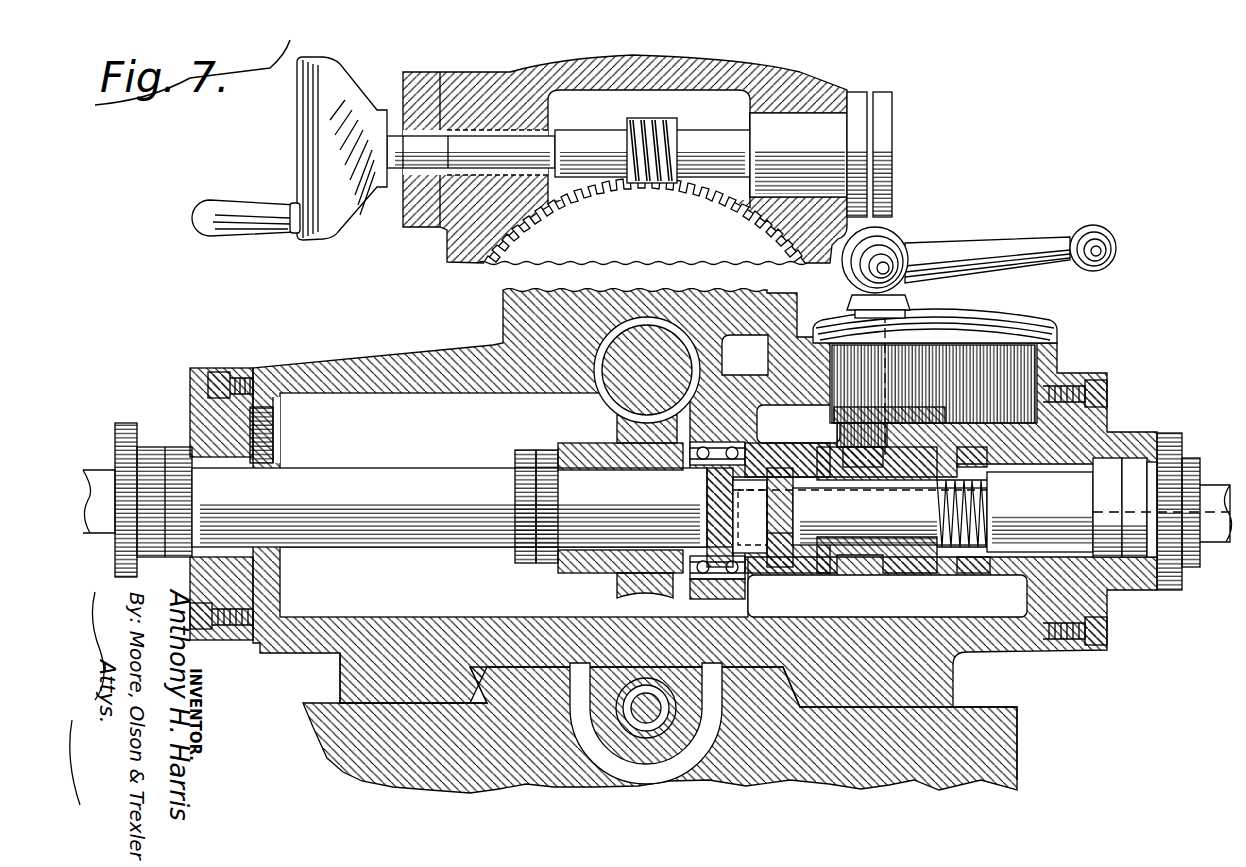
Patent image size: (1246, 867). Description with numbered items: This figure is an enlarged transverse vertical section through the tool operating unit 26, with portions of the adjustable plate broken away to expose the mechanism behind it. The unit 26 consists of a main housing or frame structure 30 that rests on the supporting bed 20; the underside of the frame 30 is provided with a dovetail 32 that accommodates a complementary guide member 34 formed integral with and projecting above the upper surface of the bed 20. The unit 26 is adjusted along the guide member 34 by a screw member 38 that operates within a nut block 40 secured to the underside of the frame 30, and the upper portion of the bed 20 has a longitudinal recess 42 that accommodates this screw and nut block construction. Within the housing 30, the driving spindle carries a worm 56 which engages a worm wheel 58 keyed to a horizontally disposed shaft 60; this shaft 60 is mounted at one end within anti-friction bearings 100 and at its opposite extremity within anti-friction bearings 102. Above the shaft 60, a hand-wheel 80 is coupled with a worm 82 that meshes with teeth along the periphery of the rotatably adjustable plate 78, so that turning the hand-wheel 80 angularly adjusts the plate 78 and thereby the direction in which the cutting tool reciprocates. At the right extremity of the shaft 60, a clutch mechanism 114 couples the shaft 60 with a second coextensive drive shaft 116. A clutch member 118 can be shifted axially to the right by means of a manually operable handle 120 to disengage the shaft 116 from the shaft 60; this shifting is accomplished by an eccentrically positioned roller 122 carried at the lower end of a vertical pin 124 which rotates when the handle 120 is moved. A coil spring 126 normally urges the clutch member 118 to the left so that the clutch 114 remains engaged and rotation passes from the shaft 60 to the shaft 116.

The supporting bed 20 is at (975, 720).
The tool operating unit 26 is at (857, 80).
The main housing 30 is at (342, 363).
The dovetail 32 is at (770, 700).
The guide member 34 is at (488, 662).
The screw member 38 is at (646, 725).
The nut block 40 is at (612, 730).
The longitudinal recess 42 is at (590, 735).
The worm 56 is at (688, 350).
The worm wheel 58 is at (620, 436).
The horizontally disposed shaft 60 is at (582, 472).
The rotatably adjustable plate 78 is at (642, 233).
The hand-wheel 80 is at (328, 200).
The worm 82 is at (662, 125).
The anti-friction bearings 100 is at (723, 427).
The anti-friction bearings 102 is at (160, 455).
The clutch mechanism 114 is at (793, 580).
The second drive shaft 116 is at (905, 545).
The clutch member 118 is at (858, 573).
The manually operable handle 120 is at (985, 250).
The eccentrically positioned roller 122 is at (907, 452).
The vertical pin 124 is at (877, 363).
The coil spring 126 is at (975, 548).